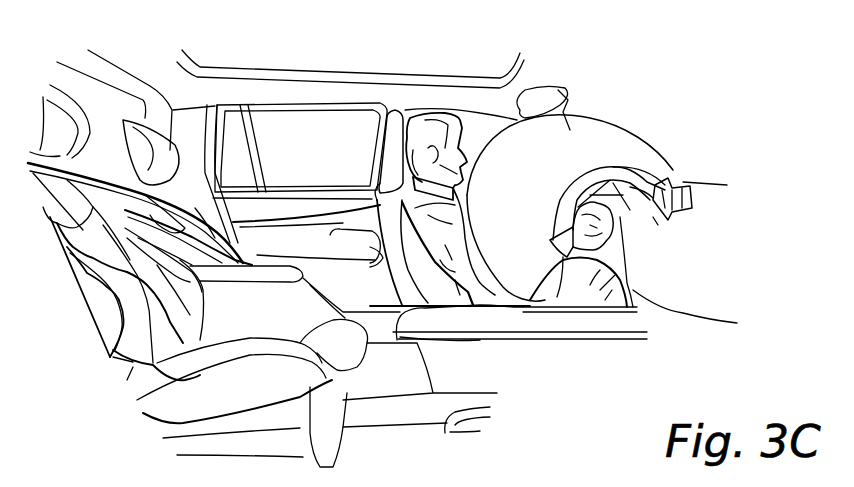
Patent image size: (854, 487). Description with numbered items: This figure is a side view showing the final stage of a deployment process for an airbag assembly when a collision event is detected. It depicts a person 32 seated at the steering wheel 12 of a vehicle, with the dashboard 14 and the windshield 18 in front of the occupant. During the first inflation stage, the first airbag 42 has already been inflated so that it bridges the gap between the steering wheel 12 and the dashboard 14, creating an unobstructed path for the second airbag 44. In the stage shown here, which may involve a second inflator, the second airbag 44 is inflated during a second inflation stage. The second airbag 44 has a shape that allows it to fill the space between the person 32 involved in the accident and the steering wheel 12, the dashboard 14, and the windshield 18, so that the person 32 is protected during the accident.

The person 32 is at (397, 108).
The second airbag 44 is at (557, 92).
The windshield 18 is at (567, 130).
The steering wheel 12 is at (612, 182).
The first airbag 42 is at (633, 170).
The dashboard 14 is at (687, 305).